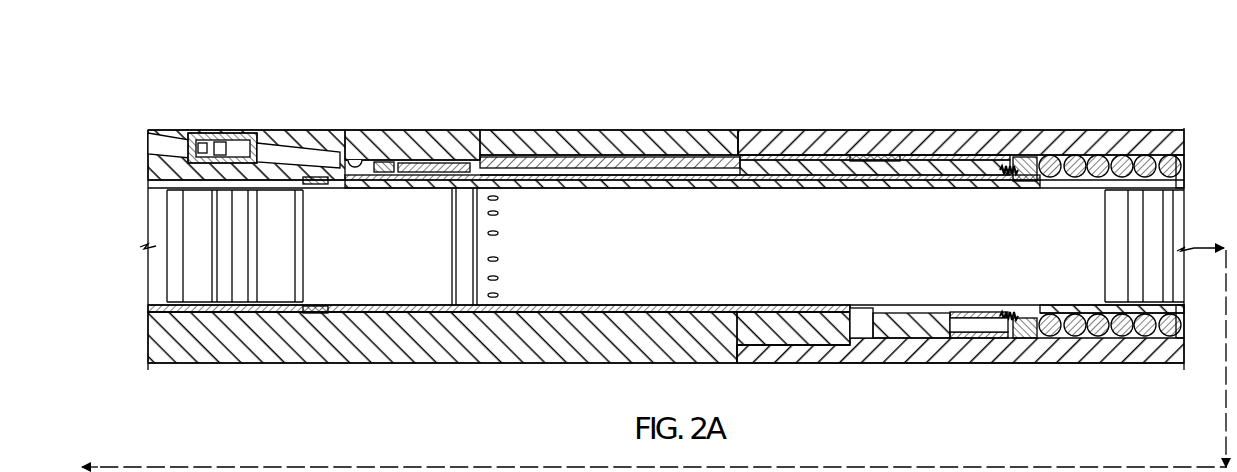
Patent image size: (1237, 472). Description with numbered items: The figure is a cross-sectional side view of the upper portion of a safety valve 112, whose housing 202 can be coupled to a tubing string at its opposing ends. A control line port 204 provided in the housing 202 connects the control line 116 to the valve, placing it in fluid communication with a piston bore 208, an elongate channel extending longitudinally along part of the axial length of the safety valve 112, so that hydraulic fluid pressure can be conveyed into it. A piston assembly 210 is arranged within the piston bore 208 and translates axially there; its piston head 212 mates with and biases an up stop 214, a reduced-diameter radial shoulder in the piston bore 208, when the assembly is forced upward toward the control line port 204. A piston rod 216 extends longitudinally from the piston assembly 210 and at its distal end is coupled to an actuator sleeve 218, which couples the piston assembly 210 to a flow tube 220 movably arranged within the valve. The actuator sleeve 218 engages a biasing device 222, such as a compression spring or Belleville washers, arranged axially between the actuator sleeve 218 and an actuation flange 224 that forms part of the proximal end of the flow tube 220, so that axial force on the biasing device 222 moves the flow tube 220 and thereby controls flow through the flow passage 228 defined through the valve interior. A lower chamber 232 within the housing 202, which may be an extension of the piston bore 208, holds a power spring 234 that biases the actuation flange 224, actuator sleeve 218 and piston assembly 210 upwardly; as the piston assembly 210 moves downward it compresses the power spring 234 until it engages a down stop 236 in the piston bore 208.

The safety valve 112 is at (597, 101).
The control line 116 is at (164, 131).
The housing 202 is at (687, 138).
The control line port 204 is at (213, 143).
The piston bore 208 is at (358, 150).
The piston assembly 210 is at (490, 158).
The piston head 212 is at (410, 162).
The up stop 214 is at (383, 160).
The piston rod 216 is at (790, 164).
The actuator sleeve 218 is at (965, 160).
The flow tube 220 is at (1114, 192).
The biasing device 222 is at (1014, 180).
The actuation flange 224 is at (1030, 184).
The flow passage 228 is at (853, 249).
The lower chamber 232 is at (1158, 160).
The power spring 234 is at (1077, 162).
The down stop 236 is at (873, 157).